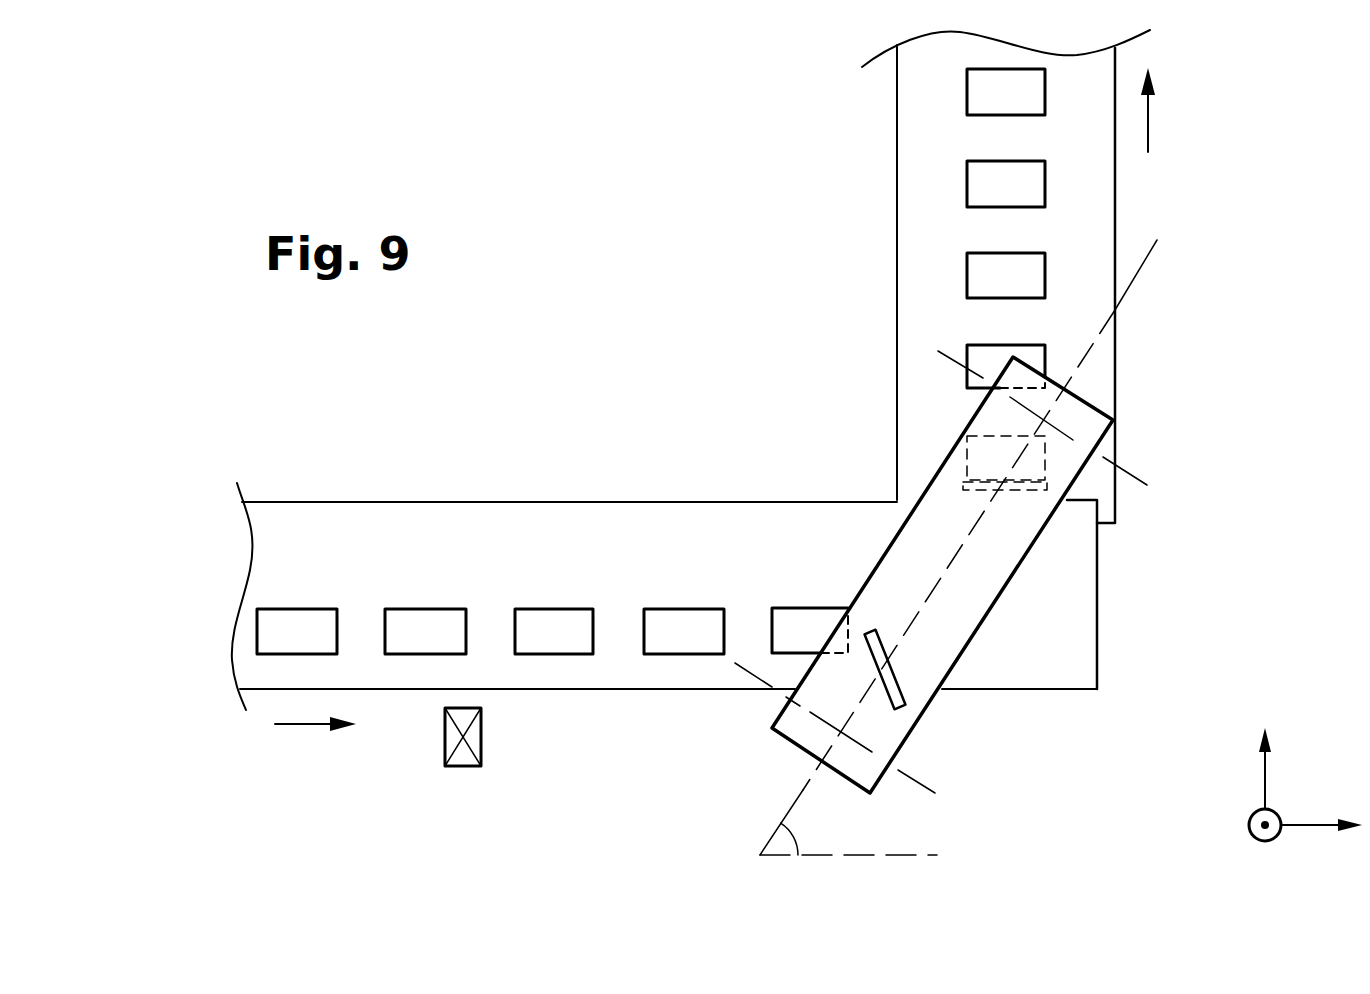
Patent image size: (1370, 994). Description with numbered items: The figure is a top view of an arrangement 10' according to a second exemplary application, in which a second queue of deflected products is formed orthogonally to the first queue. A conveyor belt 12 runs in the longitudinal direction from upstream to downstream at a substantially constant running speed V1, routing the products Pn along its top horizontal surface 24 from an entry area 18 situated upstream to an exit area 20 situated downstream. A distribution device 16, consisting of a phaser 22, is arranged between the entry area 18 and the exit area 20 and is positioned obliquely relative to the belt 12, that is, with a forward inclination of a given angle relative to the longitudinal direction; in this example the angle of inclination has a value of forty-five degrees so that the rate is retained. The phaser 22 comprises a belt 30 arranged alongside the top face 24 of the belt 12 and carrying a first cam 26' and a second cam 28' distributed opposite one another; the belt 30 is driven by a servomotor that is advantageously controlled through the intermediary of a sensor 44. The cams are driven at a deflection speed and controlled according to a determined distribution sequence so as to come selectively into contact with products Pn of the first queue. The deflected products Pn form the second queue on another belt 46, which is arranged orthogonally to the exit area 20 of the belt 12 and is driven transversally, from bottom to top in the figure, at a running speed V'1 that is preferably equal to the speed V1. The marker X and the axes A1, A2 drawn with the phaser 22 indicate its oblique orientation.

The arrangement 10' is at (687, 243).
The conveyor belt 12 is at (560, 500).
The distribution device 16 is at (1162, 423).
The entry area 18 is at (312, 530).
The exit area 20 is at (1021, 686).
The phaser 22 is at (900, 803).
The top horizontal surface 24 is at (645, 537).
The first cam 26' is at (1069, 508).
The second cam 28' is at (935, 689).
The belt 30 is at (810, 733).
The sensor 44 is at (476, 737).
The other belt 46 is at (1122, 183).
The products Pn is at (413, 623).
The running speed of the belt V1 is at (315, 737).
The running speed of the other belt V'1 is at (1170, 110).
The longitudinal axis of transfer arm X is at (1148, 258).
The first axis A1 is at (932, 788).
The second axis A2 is at (1128, 475).